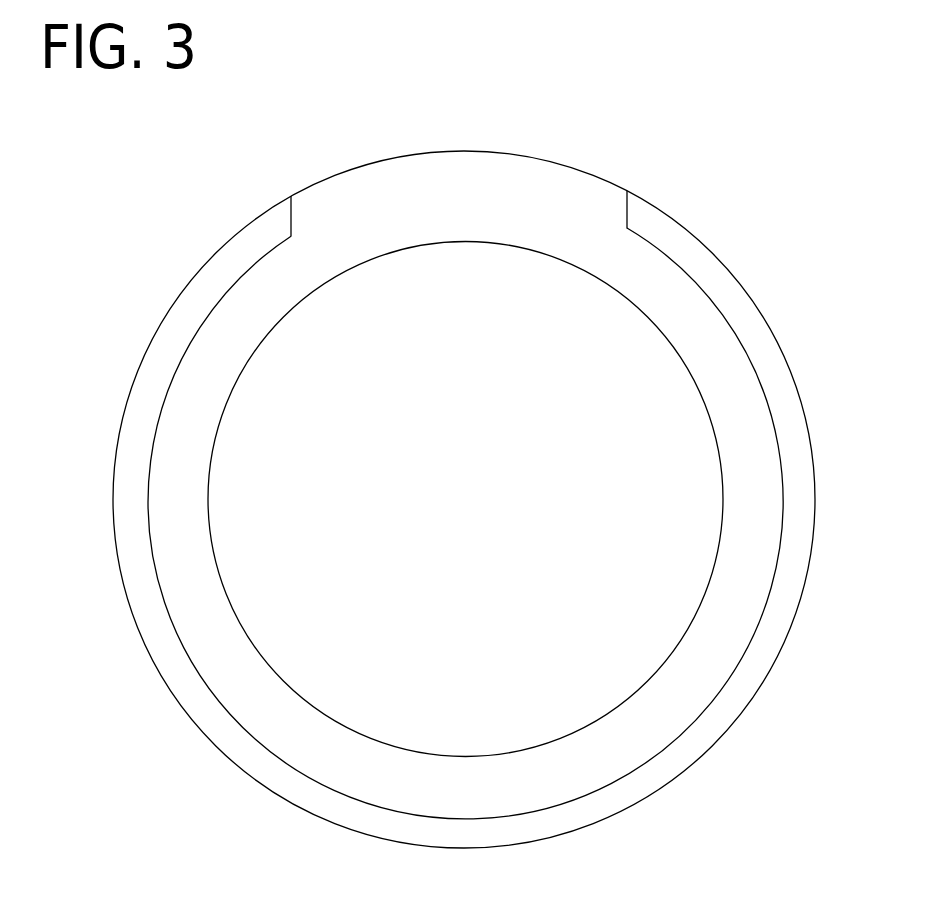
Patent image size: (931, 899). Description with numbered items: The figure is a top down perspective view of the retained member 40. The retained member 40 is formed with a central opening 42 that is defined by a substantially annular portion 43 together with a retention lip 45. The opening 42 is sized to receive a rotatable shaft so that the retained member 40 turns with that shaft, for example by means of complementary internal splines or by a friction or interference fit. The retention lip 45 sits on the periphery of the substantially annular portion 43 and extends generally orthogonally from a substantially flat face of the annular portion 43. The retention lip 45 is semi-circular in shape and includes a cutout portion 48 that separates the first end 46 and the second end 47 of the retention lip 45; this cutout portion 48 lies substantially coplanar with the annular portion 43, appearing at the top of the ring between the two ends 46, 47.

The retained member 40 is at (727, 219).
The central opening 42 is at (688, 535).
The substantially annular portion 43 is at (225, 340).
The retention lip 45 is at (545, 820).
The first end of the retention lip 46 is at (300, 208).
The second end of the retention lip 47 is at (625, 208).
The cutout portion 48 is at (422, 168).